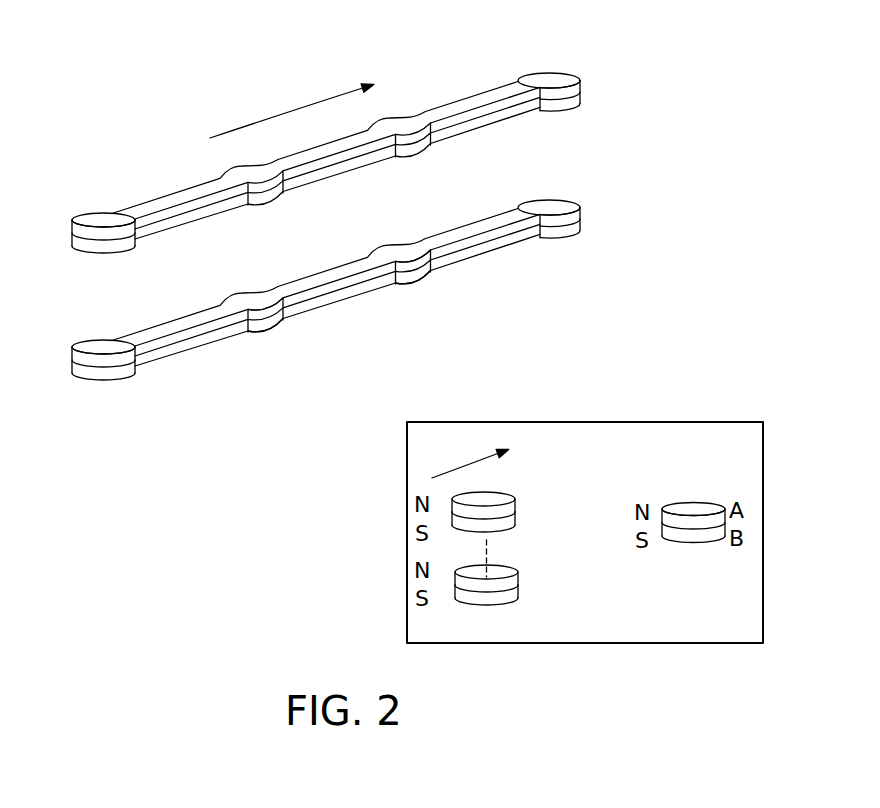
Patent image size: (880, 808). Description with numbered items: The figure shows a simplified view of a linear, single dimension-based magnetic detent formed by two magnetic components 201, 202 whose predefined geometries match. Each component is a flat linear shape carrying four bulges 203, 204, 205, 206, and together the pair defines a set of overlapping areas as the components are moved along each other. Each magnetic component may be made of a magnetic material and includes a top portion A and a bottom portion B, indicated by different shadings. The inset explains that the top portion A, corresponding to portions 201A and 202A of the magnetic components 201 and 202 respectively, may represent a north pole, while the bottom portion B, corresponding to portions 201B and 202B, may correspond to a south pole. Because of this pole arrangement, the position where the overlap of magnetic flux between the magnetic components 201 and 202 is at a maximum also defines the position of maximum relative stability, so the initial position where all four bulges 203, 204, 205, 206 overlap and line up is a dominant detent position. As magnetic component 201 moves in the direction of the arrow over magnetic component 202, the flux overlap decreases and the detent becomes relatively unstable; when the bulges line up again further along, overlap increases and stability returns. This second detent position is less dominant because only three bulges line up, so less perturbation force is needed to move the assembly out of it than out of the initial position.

The magnetic component 201 is at (606, 51).
The magnetic component 202 is at (363, 288).
The bulge 203 is at (108, 388).
The bulge 204 is at (276, 338).
The bulge 205 is at (428, 295).
The bulge 206 is at (580, 246).
The top portion of magnetic component 201 201A is at (516, 504).
The bottom portion of magnetic component 201 201B is at (516, 518).
The top portion of magnetic component 202 202A is at (519, 578).
The bottom portion of magnetic component 202 202B is at (519, 592).